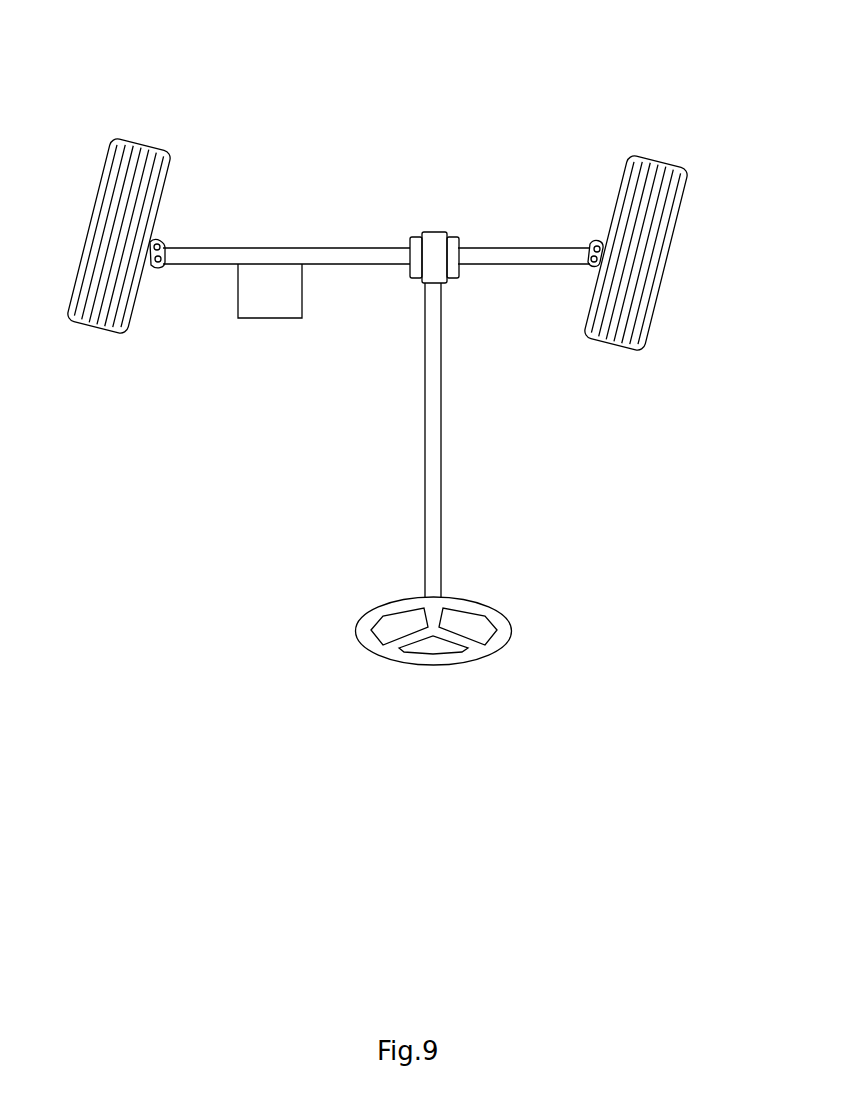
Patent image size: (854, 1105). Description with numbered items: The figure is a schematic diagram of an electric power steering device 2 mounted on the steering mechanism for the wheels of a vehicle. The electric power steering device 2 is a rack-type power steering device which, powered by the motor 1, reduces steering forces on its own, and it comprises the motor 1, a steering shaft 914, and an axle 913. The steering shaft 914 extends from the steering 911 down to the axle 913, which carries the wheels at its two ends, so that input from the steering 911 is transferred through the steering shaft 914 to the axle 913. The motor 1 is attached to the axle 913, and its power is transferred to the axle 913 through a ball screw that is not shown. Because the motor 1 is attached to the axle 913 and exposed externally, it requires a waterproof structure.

The electric power steering device 2 is at (559, 88).
The motor 1 is at (267, 318).
The steering 911 is at (422, 658).
The axle 913 is at (483, 258).
The steering shaft 914 is at (435, 538).